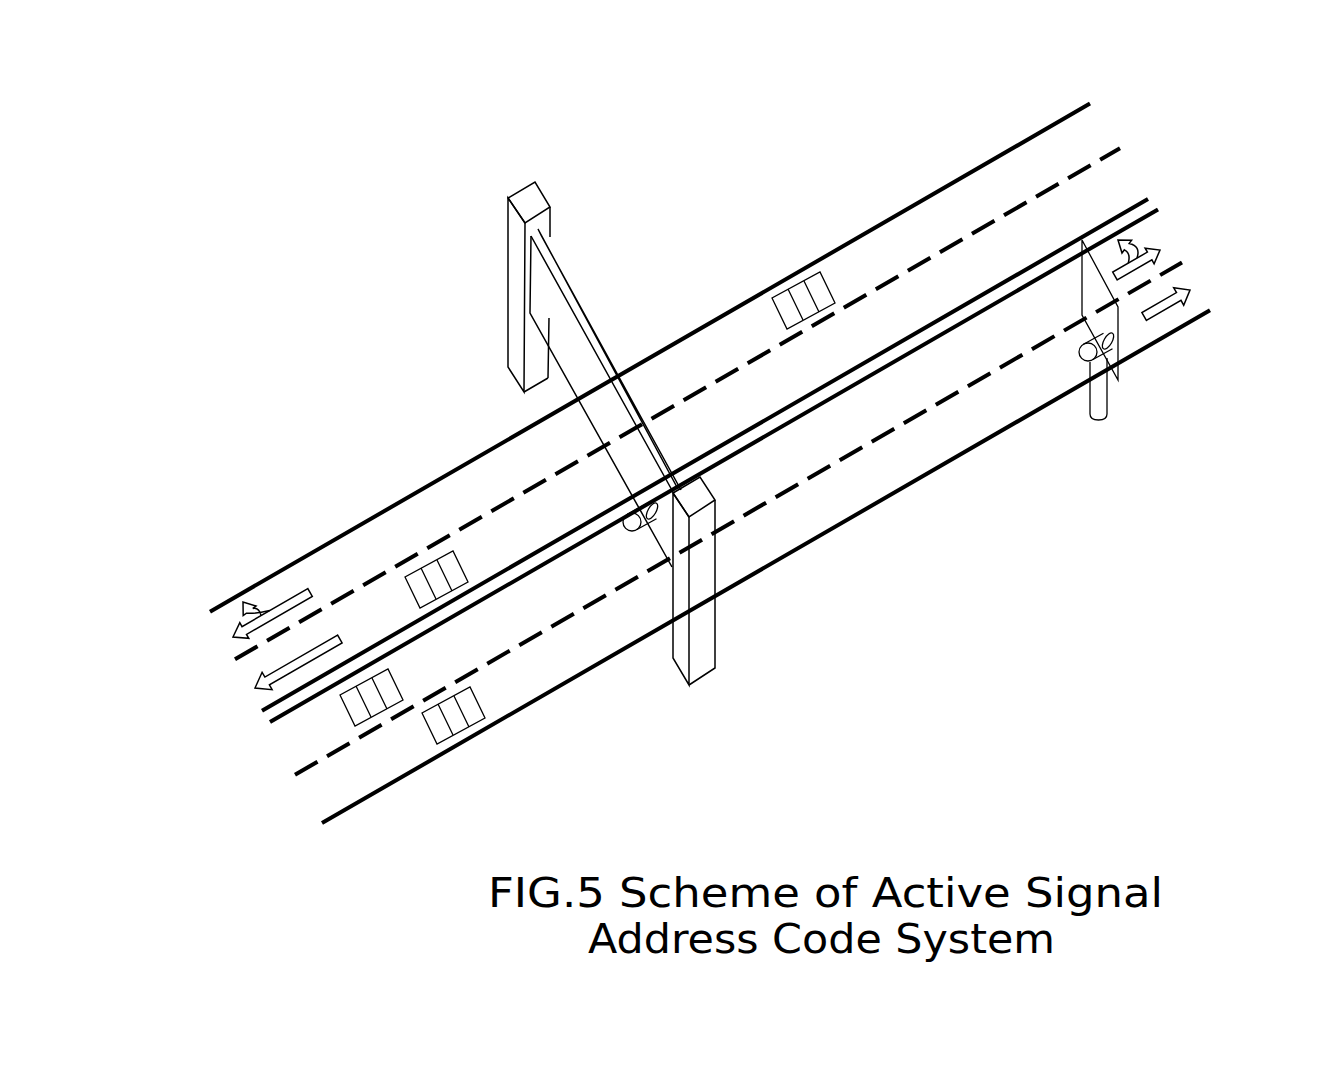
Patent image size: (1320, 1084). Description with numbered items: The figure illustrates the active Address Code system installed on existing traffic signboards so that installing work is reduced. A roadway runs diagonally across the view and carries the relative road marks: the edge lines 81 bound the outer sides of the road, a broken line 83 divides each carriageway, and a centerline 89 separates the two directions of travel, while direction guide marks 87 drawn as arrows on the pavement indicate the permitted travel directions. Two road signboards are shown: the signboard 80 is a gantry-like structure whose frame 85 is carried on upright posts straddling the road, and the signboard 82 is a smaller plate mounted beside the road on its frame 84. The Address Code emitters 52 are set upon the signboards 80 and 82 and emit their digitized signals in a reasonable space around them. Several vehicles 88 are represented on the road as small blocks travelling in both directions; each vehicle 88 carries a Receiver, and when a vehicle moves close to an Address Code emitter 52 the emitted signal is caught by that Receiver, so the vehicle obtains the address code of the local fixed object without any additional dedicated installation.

The Address Code emitter 52 is at (630, 526).
The road signboard 80 is at (550, 307).
The edge line 81 is at (813, 262).
The road signboard 82 is at (1112, 322).
The broken line 83 is at (898, 276).
The frame of signboard 84 is at (1107, 393).
The frame of signboard 85 is at (698, 567).
The direction guide mark 87 is at (1162, 252).
The vehicle 88 is at (785, 302).
The centerline 89 is at (1000, 284).